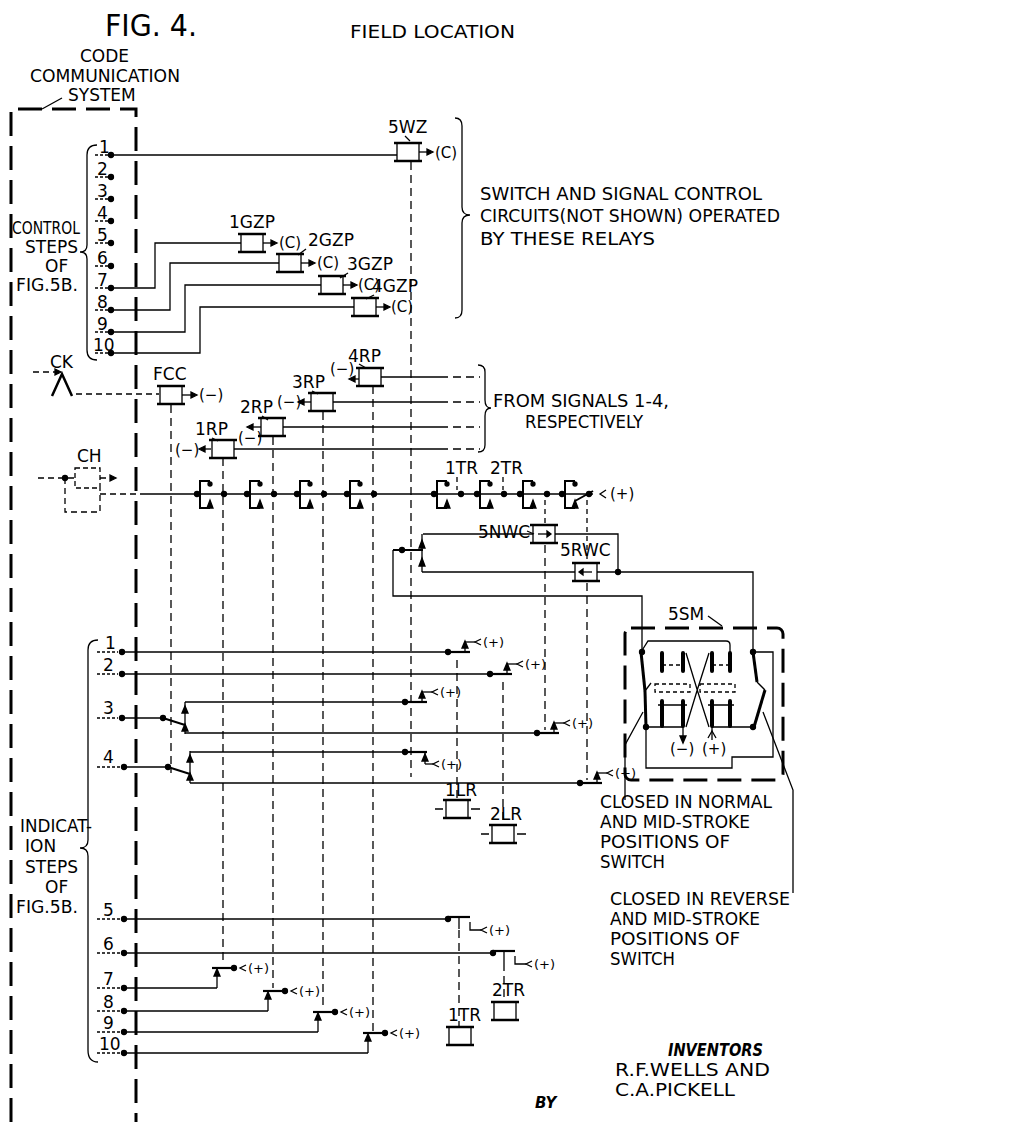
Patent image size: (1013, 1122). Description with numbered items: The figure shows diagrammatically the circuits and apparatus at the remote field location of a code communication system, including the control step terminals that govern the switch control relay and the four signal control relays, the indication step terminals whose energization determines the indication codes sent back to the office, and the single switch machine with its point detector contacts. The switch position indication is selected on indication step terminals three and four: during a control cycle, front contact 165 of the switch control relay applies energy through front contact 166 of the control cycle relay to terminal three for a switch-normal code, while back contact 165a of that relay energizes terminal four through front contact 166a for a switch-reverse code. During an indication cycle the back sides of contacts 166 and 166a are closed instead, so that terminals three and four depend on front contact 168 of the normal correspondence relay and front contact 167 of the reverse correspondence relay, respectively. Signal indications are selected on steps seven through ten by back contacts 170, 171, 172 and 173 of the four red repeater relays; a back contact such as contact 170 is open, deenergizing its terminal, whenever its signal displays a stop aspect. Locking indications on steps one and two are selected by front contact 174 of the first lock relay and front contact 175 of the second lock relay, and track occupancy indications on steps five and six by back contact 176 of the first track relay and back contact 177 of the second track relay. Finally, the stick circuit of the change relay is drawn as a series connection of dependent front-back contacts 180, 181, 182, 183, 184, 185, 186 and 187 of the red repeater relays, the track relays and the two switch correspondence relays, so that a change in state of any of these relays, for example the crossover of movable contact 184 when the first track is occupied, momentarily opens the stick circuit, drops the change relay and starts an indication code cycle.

The front contact of relay 5WZ 165 is at (408, 706).
The back contact of relay 5WZ 165a is at (409, 755).
The front-back contact of relay FCC 166 is at (170, 726).
The front-back contact of relay FCC 166a is at (174, 776).
The front contact of relay 5RWC 167 is at (597, 784).
The front contact of relay 5NWC 168 is at (541, 736).
The back contact of relay 1RP 170 is at (224, 970).
The back contact of relay 2RP 171 is at (275, 993).
The back contact of relay 3RP 172 is at (325, 1014).
The back contact of relay 4RP 173 is at (375, 1035).
The front contact of relay 1LR 174 is at (460, 648).
The front contact of relay 2LR 175 is at (503, 677).
The back contact of relay 1TR 176 is at (458, 916).
The back contact of relay 2TR 177 is at (503, 950).
The dependent front-back contact of relay 1RP 180 is at (210, 498).
The dependent front-back contact of relay 2RP 181 is at (260, 498).
The dependent front-back contact of relay 3RP 182 is at (310, 498).
The dependent front-back contact of relay 4RP 183 is at (360, 498).
The dependent front-back contact of relay 1TR 184 is at (447, 498).
The dependent front-back contact of relay 2TR 185 is at (490, 498).
The dependent front-back contact of relay 5NWC 186 is at (533, 498).
The dependent front-back contact of relay 5RWC 187 is at (577, 500).